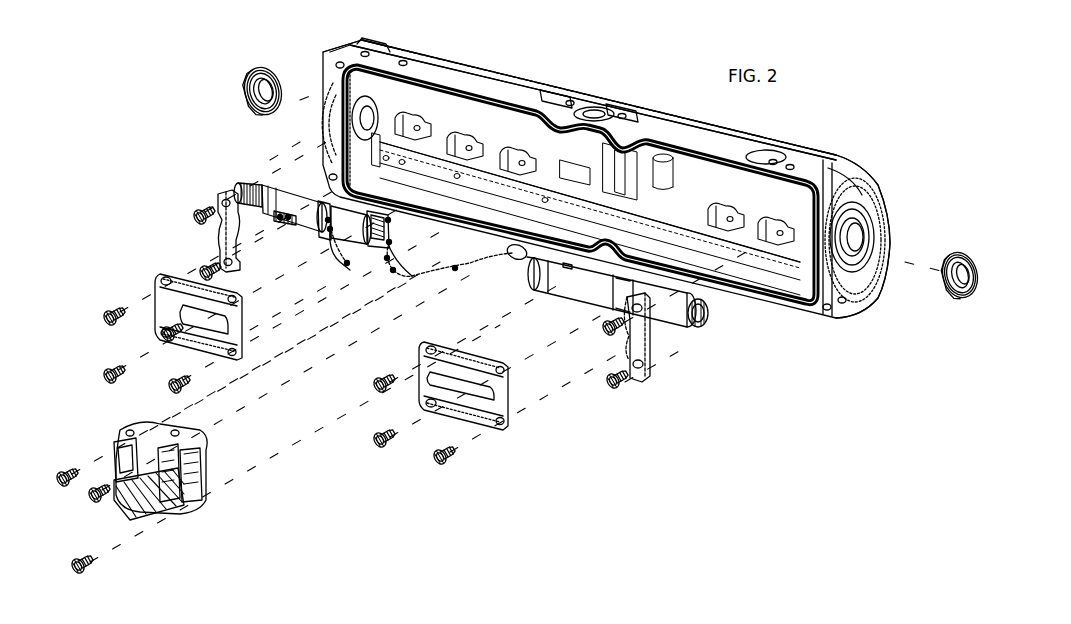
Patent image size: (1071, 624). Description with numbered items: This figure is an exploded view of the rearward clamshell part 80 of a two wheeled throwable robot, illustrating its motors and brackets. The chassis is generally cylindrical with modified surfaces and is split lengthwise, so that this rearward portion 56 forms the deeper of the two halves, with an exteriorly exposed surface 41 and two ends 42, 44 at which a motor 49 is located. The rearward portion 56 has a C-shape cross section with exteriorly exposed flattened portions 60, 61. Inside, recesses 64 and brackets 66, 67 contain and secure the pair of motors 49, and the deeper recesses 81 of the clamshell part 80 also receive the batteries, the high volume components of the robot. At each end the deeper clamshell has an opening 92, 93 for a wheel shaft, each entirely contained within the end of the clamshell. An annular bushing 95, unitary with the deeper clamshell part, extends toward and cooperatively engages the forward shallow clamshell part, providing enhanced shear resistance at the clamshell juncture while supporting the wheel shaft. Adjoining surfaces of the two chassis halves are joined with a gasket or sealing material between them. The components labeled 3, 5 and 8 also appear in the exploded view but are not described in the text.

The seal 3 is at (250, 78).
The actuator cylinder 5 is at (516, 253).
The control module 8 is at (188, 497).
The exteriorly exposed surface 41 is at (610, 178).
The end 42 is at (333, 55).
The end 44 is at (860, 173).
The motor 49 is at (278, 197).
The rearward portion 56 is at (513, 78).
The exteriorly exposed flattened portion 60 is at (768, 285).
The exteriorly exposed flattened portion 61 is at (492, 72).
The recess 64 is at (518, 132).
The bracket 66 is at (647, 375).
The bracket 67 is at (498, 435).
The clamshell part 80 is at (697, 123).
The deeper recess 81 is at (458, 110).
The opening 92 is at (853, 233).
The opening 93 is at (362, 127).
The annular bushing 95 is at (843, 272).